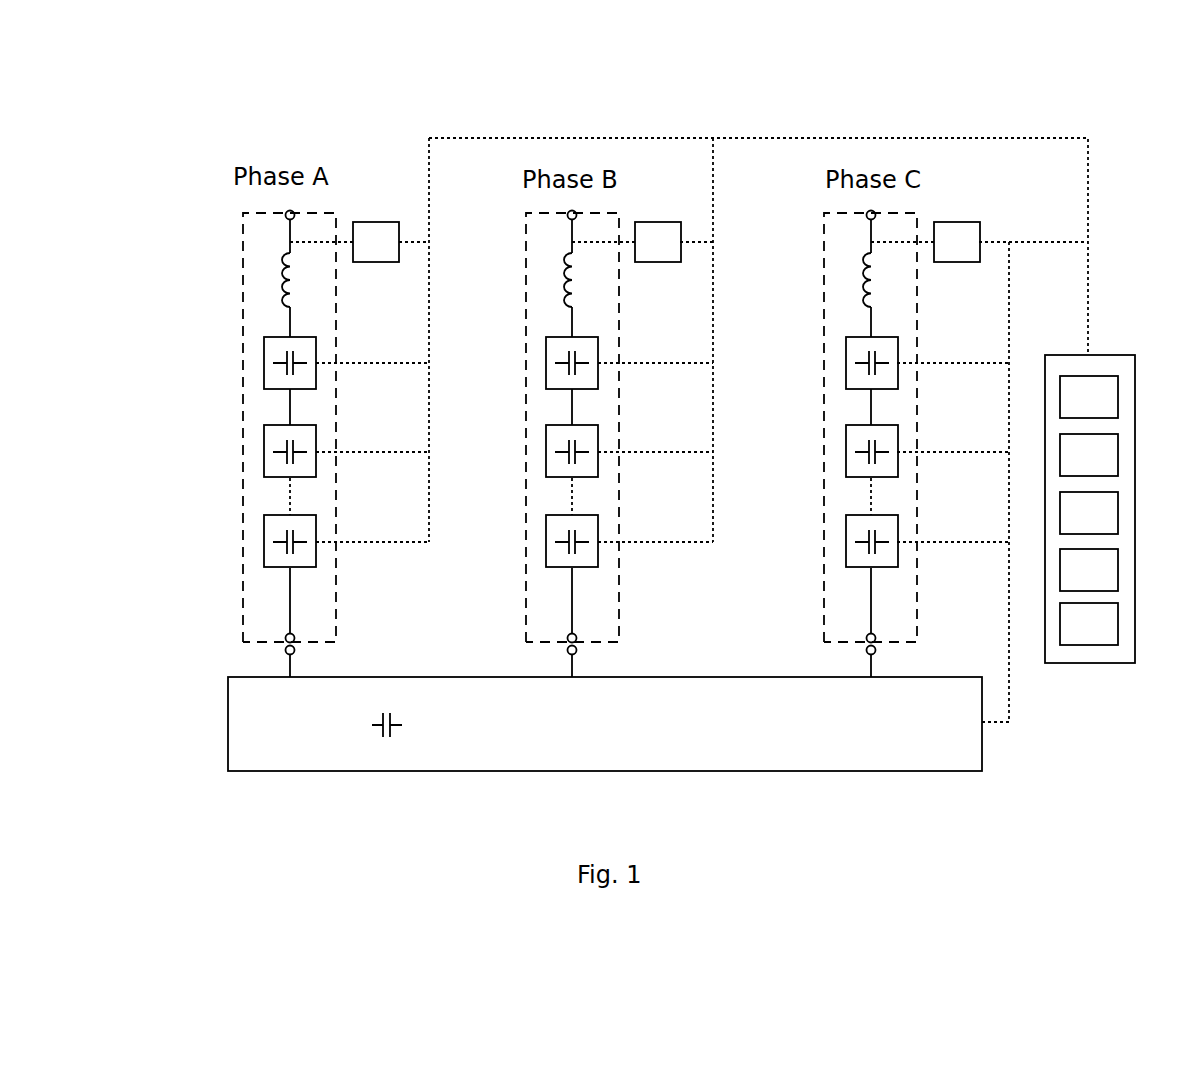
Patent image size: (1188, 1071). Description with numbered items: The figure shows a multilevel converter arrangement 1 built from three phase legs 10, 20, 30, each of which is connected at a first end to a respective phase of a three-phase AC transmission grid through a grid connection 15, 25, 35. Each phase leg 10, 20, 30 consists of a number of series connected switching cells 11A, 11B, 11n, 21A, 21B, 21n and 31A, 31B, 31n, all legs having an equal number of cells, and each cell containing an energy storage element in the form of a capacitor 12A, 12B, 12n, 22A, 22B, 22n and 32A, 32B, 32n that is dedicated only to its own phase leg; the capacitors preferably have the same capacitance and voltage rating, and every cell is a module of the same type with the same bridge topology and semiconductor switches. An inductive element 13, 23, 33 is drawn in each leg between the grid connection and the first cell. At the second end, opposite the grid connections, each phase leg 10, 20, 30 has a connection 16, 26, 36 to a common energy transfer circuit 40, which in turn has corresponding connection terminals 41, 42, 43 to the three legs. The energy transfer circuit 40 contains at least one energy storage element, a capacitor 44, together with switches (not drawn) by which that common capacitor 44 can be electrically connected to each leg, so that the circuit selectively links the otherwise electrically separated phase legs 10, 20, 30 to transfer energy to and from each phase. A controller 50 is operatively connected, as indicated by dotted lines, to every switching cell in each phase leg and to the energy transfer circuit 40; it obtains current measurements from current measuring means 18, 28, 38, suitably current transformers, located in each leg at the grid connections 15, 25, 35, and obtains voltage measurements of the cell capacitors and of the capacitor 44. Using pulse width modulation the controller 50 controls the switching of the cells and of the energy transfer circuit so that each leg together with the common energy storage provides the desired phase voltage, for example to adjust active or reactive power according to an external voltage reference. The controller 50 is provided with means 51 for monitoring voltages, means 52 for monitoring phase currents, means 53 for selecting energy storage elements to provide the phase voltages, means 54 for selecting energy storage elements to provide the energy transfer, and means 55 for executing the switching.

The multilevel converter arrangement 1 is at (1152, 126).
The phase leg 10 is at (243, 275).
The switching cell 11A is at (264, 367).
The switching cell 11B is at (264, 453).
The switching cell 11n is at (264, 543).
The capacitor 12A is at (307, 346).
The capacitor 12B is at (316, 441).
The capacitor 12n is at (307, 527).
The phase A inductor 13 is at (288, 283).
The connection 15 is at (296, 214).
The connection 16 is at (296, 636).
The current measuring means 18 is at (376, 242).
The phase leg 20 is at (526, 292).
The switching cell 21A is at (598, 350).
The switching cell 21B is at (598, 440).
The switching cell 21n is at (590, 528).
The capacitor 22A is at (582, 378).
The capacitor 22B is at (582, 460).
The capacitor 22n is at (582, 553).
The phase B inductor 23 is at (570, 284).
The connection 25 is at (578, 214).
The connection 26 is at (578, 636).
The current measuring means 28 is at (658, 242).
The phase leg 30 is at (824, 285).
The switching cell 31A is at (897, 350).
The switching cell 31B is at (897, 440).
The switching cell 31n is at (897, 528).
The capacitor 32A is at (862, 384).
The capacitor 32B is at (862, 470).
The capacitor 32n is at (862, 560).
The phase C inductor 33 is at (895, 275).
The connection 35 is at (877, 214).
The connection 36 is at (877, 636).
The current measuring means 38 is at (957, 242).
The energy transfer circuit 40 is at (621, 737).
The connection terminal 41 is at (298, 650).
The connection terminal 42 is at (580, 650).
The connection terminal 43 is at (879, 650).
The capacitor 44 is at (383, 737).
The controller 50 is at (1110, 348).
The means for monitoring voltages 51 is at (1089, 397).
The means for monitoring the phase currents 52 is at (1089, 455).
The means for selecting energy storage elements to provide the phase voltages 53 is at (1089, 513).
The means for selecting energy storage elements to provide the energy transfer 54 is at (1089, 570).
The means for executing the switching 55 is at (1089, 624).